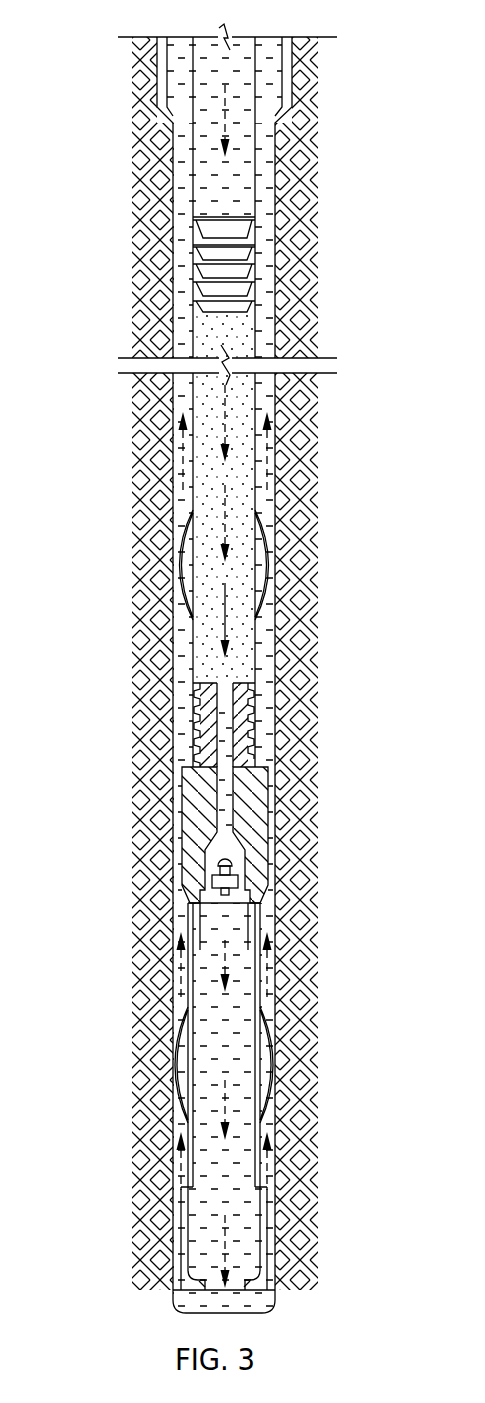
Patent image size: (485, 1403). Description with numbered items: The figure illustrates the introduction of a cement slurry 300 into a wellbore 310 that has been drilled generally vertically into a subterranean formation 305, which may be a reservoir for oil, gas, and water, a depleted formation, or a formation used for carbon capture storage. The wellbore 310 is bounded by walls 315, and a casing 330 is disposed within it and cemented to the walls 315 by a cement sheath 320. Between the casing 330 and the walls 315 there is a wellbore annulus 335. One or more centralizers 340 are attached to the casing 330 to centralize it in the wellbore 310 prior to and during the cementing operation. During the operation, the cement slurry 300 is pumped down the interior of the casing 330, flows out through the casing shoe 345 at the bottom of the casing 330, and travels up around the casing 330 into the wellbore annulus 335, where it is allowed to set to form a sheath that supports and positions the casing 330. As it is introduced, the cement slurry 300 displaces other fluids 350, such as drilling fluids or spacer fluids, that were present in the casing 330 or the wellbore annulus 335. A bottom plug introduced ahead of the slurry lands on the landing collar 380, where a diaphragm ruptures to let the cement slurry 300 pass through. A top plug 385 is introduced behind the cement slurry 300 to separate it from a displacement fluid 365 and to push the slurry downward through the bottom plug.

The cement slurry 300 is at (228, 503).
The subterranean formation 305 is at (449, 709).
The wellbore 310 is at (290, 562).
The walls 315 is at (307, 213).
The cement sheath 320 is at (297, 38).
The casing 330 is at (257, 488).
The wellbore annulus 335 is at (185, 488).
The centralizers 340 is at (172, 1068).
The casing shoe 345 is at (183, 1217).
The fluids 350 is at (226, 933).
The displacement fluid 365 is at (225, 115).
The landing collar 380 is at (195, 702).
The top plug 385 is at (193, 262).